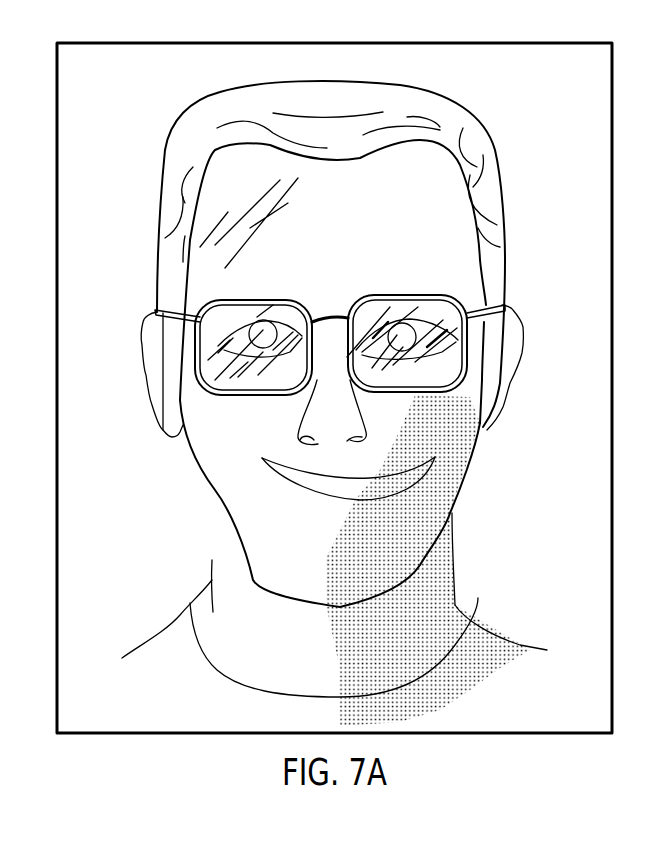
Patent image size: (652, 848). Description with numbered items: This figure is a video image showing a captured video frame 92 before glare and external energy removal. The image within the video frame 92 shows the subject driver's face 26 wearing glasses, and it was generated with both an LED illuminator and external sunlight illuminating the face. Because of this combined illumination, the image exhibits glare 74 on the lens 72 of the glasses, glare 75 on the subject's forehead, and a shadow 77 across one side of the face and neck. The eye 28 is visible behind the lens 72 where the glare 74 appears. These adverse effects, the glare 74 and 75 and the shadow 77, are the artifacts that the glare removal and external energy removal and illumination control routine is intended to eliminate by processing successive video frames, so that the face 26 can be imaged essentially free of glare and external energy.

The subject's face 26 is at (140, 145).
The eye 28 is at (263, 330).
The lens 72 is at (386, 311).
The glare 74 is at (213, 348).
The glare 75 is at (233, 198).
The shadow 77 is at (487, 433).
The video frame 92 is at (537, 43).